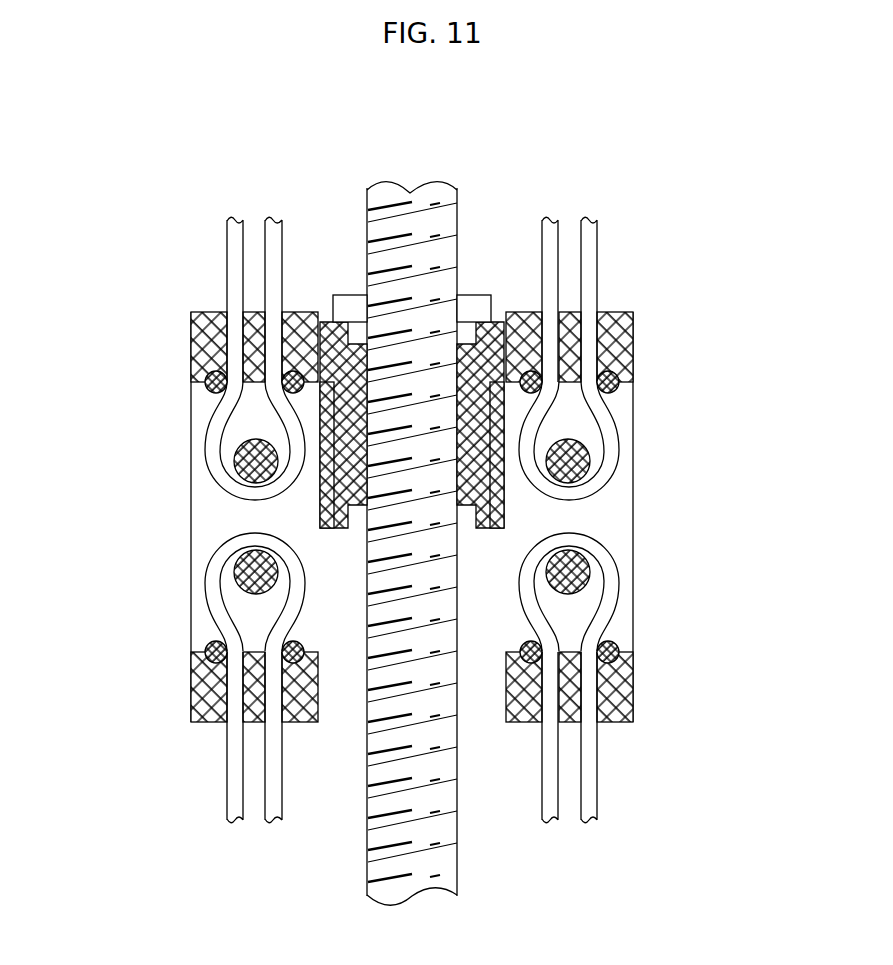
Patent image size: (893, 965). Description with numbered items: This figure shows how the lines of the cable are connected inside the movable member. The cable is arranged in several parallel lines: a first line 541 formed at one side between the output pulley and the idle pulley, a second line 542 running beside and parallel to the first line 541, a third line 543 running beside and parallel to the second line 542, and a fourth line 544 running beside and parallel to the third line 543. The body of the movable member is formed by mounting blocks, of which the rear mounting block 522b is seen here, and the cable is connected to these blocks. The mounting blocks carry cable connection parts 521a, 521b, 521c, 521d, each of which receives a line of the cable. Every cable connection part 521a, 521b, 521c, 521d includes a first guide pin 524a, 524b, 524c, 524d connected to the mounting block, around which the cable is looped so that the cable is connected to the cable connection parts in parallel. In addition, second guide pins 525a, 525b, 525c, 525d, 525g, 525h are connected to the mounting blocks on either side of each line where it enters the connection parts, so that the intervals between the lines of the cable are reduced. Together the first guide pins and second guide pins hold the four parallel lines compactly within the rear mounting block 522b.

The first line 541 is at (227, 257).
The second line 542 is at (283, 241).
The third line 543 is at (541, 241).
The fourth line 544 is at (598, 254).
The cable connection part 521a is at (191, 423).
The cable connection part 521b is at (633, 422).
The cable connection part 521c is at (191, 618).
The cable connection part 521d is at (633, 618).
The rear mounting block 522b is at (203, 523).
The first guide pin 524a is at (243, 462).
The first guide pin 524b is at (582, 462).
The first guide pin 524c is at (240, 571).
The first guide pin 524d is at (584, 571).
The second guide pin 525a is at (207, 375).
The second guide pin 525b is at (293, 382).
The second guide pin 525c is at (531, 380).
The second guide pin 525d is at (618, 375).
The second guide pin 525g is at (530, 660).
The second guide pin 525h is at (617, 660).